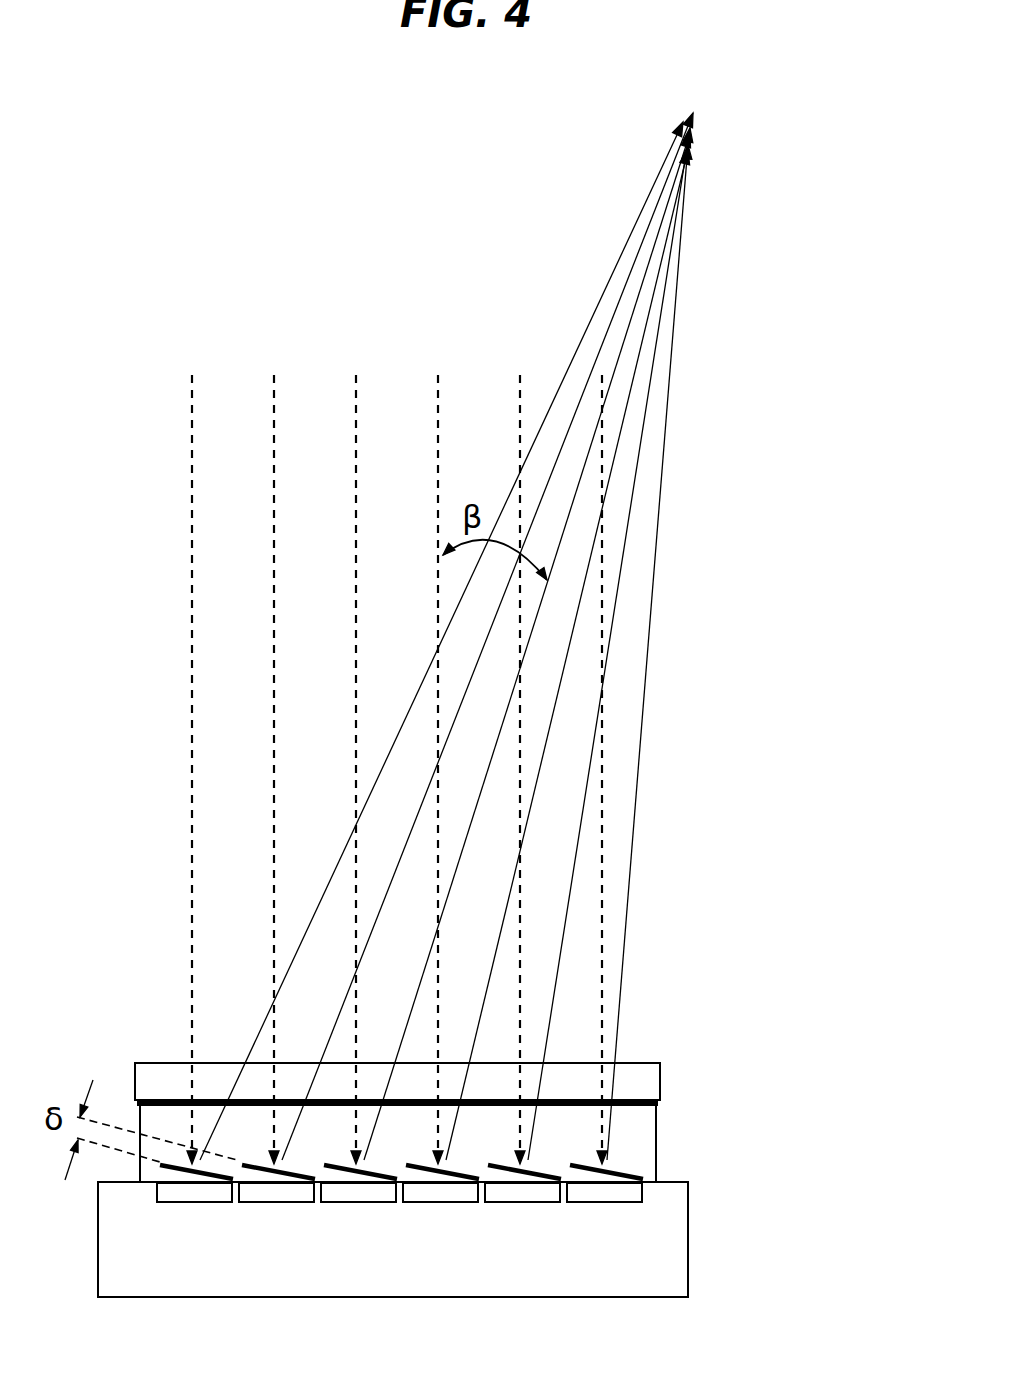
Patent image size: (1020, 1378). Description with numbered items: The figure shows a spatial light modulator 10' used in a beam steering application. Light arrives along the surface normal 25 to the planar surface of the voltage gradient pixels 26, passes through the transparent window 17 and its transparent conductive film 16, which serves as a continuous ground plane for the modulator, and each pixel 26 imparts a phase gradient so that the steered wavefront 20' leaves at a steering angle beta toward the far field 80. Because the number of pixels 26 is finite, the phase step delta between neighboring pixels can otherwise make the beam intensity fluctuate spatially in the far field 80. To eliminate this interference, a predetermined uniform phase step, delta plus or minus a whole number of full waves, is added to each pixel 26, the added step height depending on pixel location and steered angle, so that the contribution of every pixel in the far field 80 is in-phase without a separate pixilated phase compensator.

The far field 80 is at (750, 120).
The surface normal 25 is at (247, 377).
The transparent window 17 is at (572, 1077).
The transparent conductive film 16 is at (627, 1106).
The wavefront 20' is at (401, 1214).
The voltage gradient pixels 26 is at (608, 1190).
The spatial light modulator 10' is at (477, 1175).